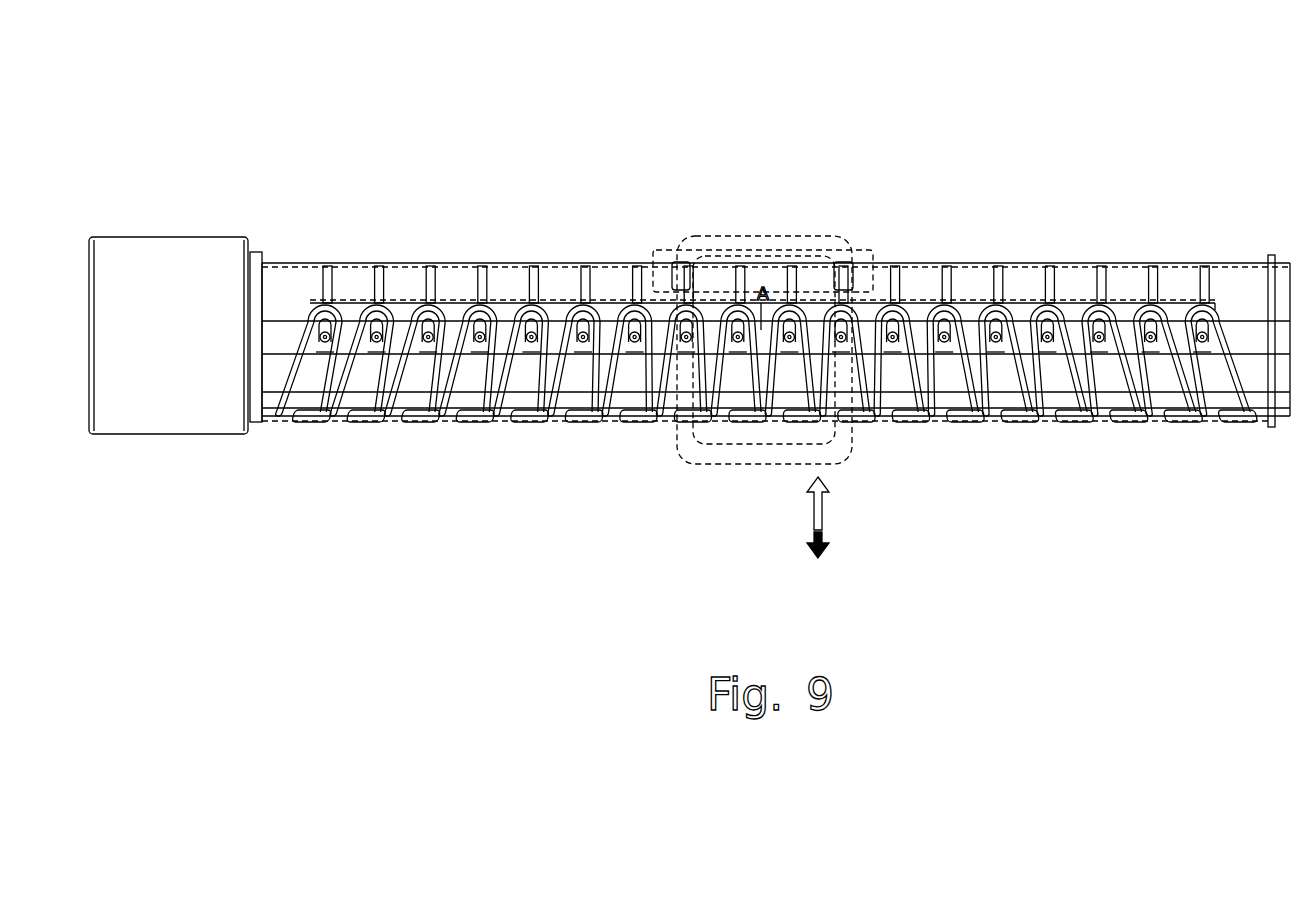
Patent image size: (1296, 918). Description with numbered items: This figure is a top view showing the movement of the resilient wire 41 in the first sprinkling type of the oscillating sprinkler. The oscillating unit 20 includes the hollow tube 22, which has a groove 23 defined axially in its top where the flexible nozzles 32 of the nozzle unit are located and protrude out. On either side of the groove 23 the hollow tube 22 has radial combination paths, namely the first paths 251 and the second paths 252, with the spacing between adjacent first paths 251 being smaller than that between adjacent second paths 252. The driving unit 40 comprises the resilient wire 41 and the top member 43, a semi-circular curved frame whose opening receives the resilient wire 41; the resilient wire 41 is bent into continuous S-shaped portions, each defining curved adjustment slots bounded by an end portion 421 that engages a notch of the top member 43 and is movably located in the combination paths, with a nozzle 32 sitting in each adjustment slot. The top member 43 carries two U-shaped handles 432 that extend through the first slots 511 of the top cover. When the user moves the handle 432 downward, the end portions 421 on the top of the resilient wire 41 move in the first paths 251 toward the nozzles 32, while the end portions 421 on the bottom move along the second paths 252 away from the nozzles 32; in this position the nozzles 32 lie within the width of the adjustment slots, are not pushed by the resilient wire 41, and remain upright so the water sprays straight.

The oscillating unit 20 is at (155, 226).
The hollow tube 22 is at (297, 270).
The groove 23 is at (1246, 340).
The driving unit 40 is at (766, 316).
The resilient wire 41 is at (763, 338).
The top member 43 is at (628, 417).
The flexible nozzles 32 is at (672, 312).
The first paths 251 is at (322, 310).
The second paths 252 is at (340, 392).
The end portion 421 is at (330, 305).
The handles 432 is at (760, 232).
The first slots 511 is at (872, 285).